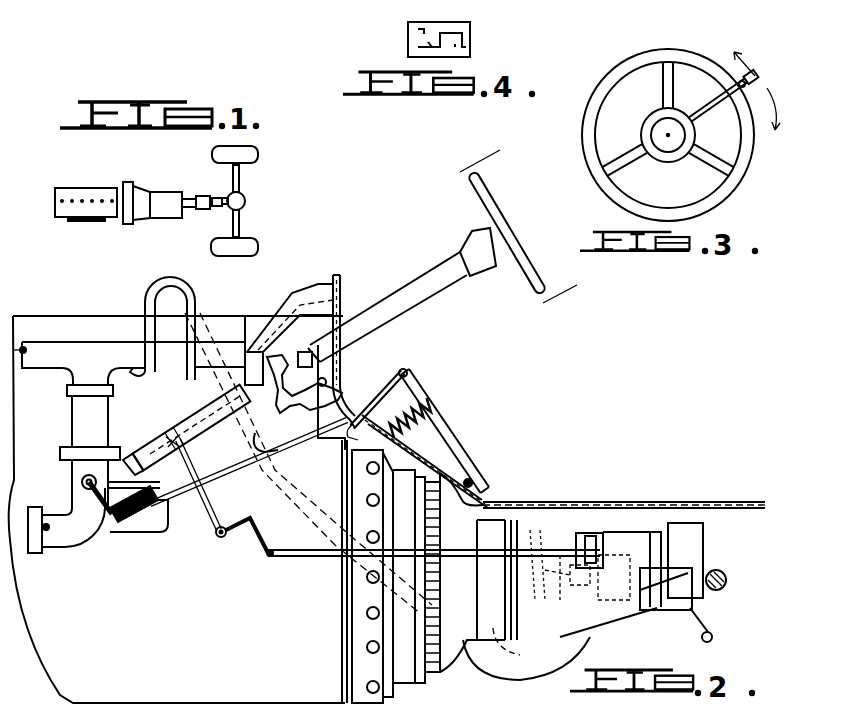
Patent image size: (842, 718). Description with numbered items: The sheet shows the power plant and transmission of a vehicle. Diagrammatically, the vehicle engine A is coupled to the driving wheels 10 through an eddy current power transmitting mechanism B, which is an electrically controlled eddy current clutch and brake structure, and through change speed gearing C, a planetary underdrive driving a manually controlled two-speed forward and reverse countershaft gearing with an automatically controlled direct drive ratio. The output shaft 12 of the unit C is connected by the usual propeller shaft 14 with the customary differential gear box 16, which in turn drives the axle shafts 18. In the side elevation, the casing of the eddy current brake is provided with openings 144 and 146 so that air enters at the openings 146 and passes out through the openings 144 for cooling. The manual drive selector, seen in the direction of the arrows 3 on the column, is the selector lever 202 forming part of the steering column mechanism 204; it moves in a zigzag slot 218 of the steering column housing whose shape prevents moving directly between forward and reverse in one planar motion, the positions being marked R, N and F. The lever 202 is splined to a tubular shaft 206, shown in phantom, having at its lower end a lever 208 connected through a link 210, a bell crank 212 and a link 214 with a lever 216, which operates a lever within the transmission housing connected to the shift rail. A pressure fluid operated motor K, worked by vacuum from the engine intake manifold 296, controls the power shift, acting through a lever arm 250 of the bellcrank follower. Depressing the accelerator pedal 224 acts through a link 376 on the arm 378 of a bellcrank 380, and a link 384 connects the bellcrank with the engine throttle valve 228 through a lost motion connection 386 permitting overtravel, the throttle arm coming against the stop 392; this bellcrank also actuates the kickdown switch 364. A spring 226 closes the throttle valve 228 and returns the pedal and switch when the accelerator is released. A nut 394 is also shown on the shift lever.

In FIG. 1, the vehicle engine A is at (80, 190).
In FIG. 1, the eddy current power transmitting mechanism B is at (140, 183).
In FIG. 1, the change speed gearing C is at (166, 193).
In FIG. 1, the driving wheels 10 is at (258, 153).
In FIG. 1, the output shaft 12 is at (201, 194).
In FIG. 1, the propeller shaft 14 is at (217, 197).
In FIG. 1, the differential gear box 16 is at (245, 200).
In FIG. 1, the axle shafts 18 is at (240, 180).
In FIG. 4, the zigzag slot 218 is at (410, 45).
In FIG. 3, the selector lever 202 is at (716, 106).
In FIG. 3, the reverse direction R is at (735, 55).
In FIG. 3, the neutral position N is at (778, 73).
In FIG. 3, the forward direction F is at (773, 122).
In FIG. 2, the arrows 3— 3 is at (518, 234).
In FIG. 2, the openings 144 is at (413, 508).
In FIG. 2, the openings 146 is at (368, 687).
In FIG. 2, the steering column mechanism 204 is at (430, 270).
In FIG. 2, the tubular shaft 206 is at (180, 400).
In FIG. 2, the lever 208 is at (210, 462).
In FIG. 2, the link 210 is at (206, 497).
In FIG. 2, the bell crank 212 is at (230, 540).
In FIG. 2, the link 214 is at (282, 558).
In FIG. 2, the lever 216 is at (605, 540).
In FIG. 2, the accelerator pedal 224 is at (450, 428).
In FIG. 2, the spring 226 is at (423, 407).
In FIG. 2, the engine throttle valve 228 is at (92, 530).
In FIG. 2, the lever arm 250 is at (498, 644).
In FIG. 2, the engine intake manifold 296 is at (143, 380).
In FIG. 2, the kickdown switch 364 is at (245, 352).
In FIG. 2, the link 376 is at (373, 403).
In FIG. 2, the arm 378 is at (350, 374).
In FIG. 2, the bellcrank 380 is at (270, 418).
In FIG. 2, the link 384 is at (278, 452).
In FIG. 2, the lost motion connection 386 is at (160, 530).
In FIG. 2, the stop 392 is at (78, 512).
In FIG. 2, the nut 394 is at (174, 450).
In FIG. 2, the pressure fluid operated motor K is at (575, 595).